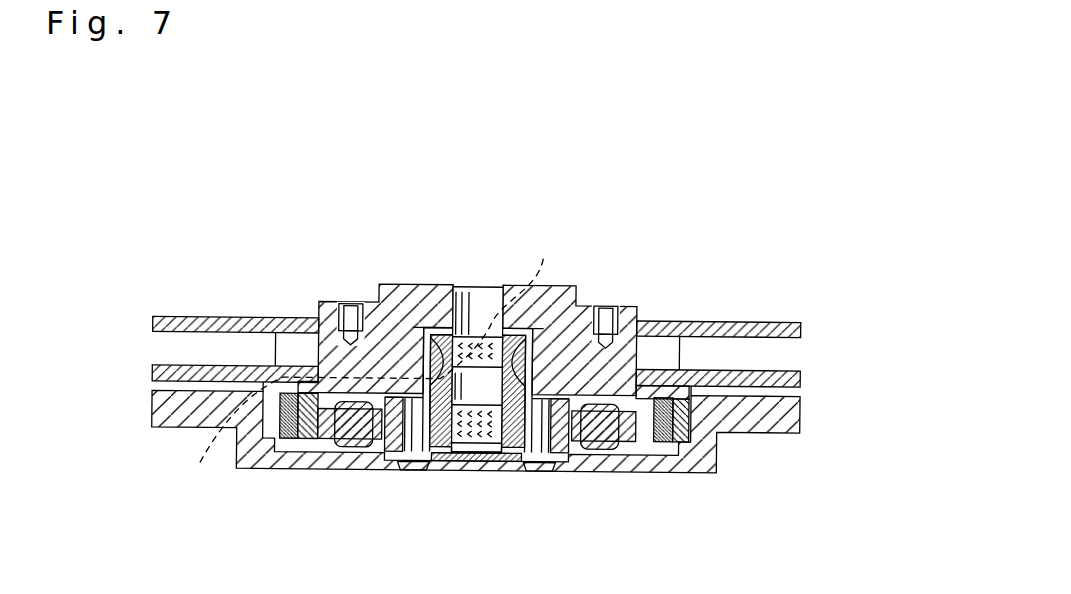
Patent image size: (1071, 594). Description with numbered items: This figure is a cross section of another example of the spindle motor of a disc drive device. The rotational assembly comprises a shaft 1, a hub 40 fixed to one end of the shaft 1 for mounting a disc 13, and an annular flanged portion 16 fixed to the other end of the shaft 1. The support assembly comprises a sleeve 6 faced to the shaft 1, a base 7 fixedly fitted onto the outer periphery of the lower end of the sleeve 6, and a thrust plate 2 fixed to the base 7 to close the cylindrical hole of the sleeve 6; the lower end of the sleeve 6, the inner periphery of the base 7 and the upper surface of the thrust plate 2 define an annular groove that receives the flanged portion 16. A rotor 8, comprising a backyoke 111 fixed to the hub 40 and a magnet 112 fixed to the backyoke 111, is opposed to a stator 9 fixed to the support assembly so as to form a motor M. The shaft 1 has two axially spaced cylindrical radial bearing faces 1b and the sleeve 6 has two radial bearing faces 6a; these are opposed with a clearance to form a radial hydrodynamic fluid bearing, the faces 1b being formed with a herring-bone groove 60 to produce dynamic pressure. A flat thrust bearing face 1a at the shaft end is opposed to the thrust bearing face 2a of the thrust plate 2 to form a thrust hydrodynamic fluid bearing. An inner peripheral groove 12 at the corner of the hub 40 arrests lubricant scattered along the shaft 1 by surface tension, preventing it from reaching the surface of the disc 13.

The shaft 1 is at (622, 381).
The flat thrust bearing face 1a is at (490, 453).
The cylindrical radial bearing faces 1b is at (503, 355).
The thrust plate 2 is at (484, 499).
The thrust bearing face 2a is at (470, 458).
The sleeve 6 is at (438, 466).
The radial bearing faces 6a is at (428, 334).
The base 7 is at (372, 470).
The rotor 8 is at (564, 456).
The stator 9 is at (648, 455).
The inner peripheral groove 12 is at (423, 329).
The disc 13 is at (217, 322).
The flanged portion 16 is at (556, 462).
The hub 40 is at (577, 306).
The groove 60 is at (371, 367).
The backyoke 111 is at (690, 418).
The magnet 112 is at (672, 428).
The motor M is at (586, 478).